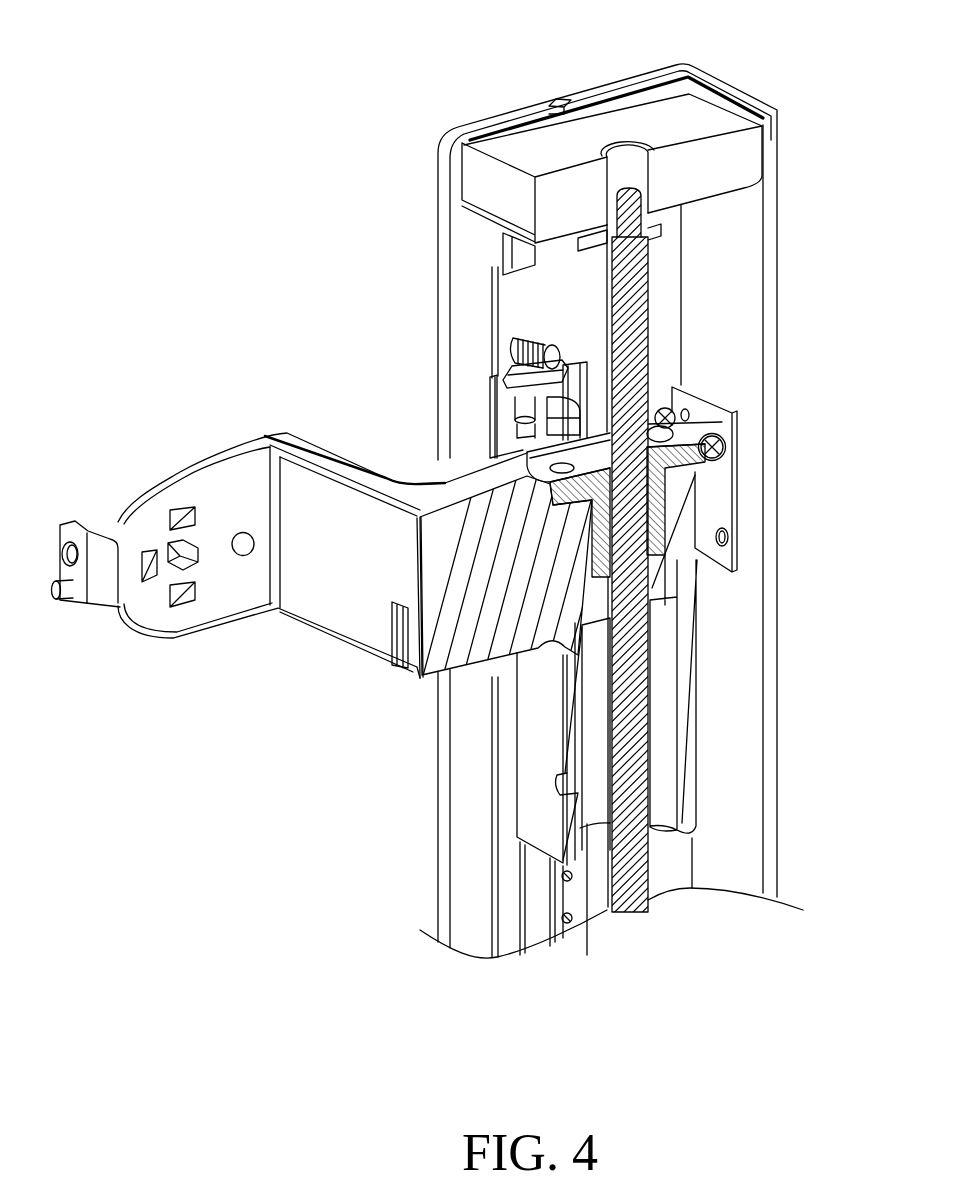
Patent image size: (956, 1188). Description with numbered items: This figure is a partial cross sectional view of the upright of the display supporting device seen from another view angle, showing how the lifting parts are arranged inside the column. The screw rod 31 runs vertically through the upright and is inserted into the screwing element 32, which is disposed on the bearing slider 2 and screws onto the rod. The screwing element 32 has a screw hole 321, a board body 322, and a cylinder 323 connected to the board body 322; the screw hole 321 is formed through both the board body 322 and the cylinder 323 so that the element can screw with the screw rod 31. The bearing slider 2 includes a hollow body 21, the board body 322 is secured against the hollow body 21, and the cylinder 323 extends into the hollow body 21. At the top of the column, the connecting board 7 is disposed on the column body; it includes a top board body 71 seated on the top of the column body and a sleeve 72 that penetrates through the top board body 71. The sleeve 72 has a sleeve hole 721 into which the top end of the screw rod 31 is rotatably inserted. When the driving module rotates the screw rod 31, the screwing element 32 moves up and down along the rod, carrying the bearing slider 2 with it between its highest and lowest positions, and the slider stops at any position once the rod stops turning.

The bearing slider 2 is at (342, 458).
The hollow body 21 is at (716, 787).
The screw rod 31 is at (635, 735).
The screwing element 32 is at (712, 479).
The screw hole 321 is at (676, 423).
The board body 322 is at (702, 470).
The cylinder 323 is at (660, 533).
The connecting board 7 is at (612, 137).
The top board body 71 is at (524, 134).
The sleeve 72 is at (577, 106).
The sleeve hole 721 is at (627, 123).